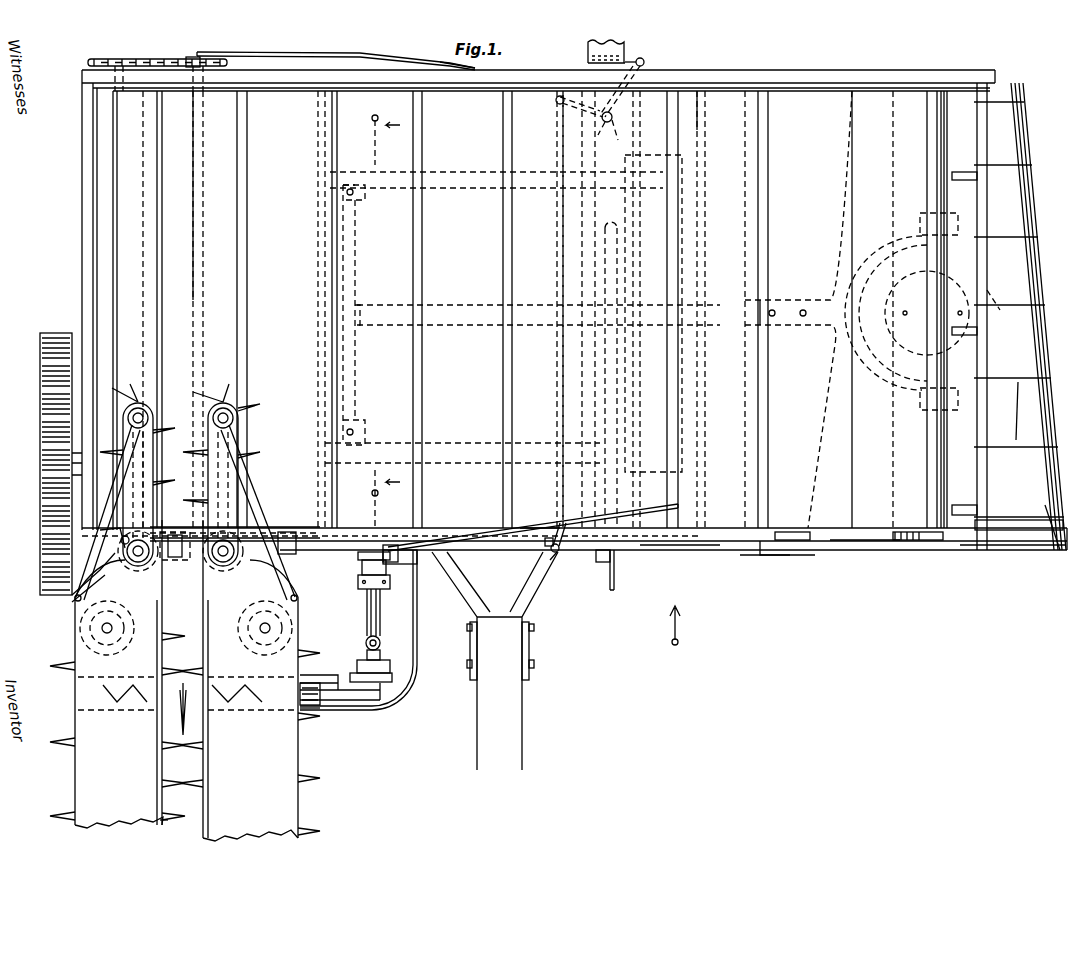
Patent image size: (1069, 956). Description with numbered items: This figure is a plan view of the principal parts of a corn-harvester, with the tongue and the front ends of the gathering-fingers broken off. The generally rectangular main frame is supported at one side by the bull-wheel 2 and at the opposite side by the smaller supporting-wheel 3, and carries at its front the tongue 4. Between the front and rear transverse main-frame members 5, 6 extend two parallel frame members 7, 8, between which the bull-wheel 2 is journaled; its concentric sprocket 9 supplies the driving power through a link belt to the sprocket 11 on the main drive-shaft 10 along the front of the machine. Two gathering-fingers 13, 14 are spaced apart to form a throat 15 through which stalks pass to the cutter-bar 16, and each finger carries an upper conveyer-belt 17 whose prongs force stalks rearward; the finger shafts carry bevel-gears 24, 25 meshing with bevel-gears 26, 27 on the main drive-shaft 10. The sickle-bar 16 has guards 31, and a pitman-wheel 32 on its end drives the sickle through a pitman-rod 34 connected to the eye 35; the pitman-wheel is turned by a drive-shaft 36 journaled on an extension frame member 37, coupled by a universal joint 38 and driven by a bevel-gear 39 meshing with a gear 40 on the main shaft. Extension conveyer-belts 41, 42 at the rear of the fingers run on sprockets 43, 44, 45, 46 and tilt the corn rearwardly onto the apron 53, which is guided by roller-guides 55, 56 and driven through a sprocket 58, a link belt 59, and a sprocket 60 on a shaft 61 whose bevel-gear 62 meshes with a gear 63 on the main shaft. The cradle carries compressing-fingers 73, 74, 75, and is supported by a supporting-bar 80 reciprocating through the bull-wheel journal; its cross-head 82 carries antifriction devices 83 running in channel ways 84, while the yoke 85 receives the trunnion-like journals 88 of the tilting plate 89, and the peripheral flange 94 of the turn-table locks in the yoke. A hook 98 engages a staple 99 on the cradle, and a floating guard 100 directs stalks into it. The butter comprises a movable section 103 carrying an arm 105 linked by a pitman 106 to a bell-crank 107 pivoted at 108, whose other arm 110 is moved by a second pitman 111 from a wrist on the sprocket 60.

The bull-wheel 2 is at (663, 476).
The supporting-wheel 3 is at (40, 468).
The tongue 4 is at (518, 712).
The front transversely-extending main-frame member 5 is at (682, 548).
The rear transversely-extending main-frame member 6 is at (668, 72).
The frame member 7 is at (609, 122).
The frame member 8 is at (693, 124).
The sprocket 9 is at (620, 258).
The main drive-shaft 10 is at (591, 565).
The sprocket 11 is at (622, 562).
The gathering-finger 13 is at (78, 765).
The gathering-finger 14 is at (300, 785).
The throat 15 is at (178, 810).
The cutter-bar 16 is at (322, 725).
The conveyer-belt 17 is at (628, 440).
The bevel-gear 24 is at (60, 600).
The bevel-gear 25 is at (265, 528).
The bevel-gear 26 is at (100, 535).
The bevel-gear 27 is at (235, 523).
The guards 31 is at (185, 703).
The pitman-wheel 32 is at (165, 685).
The pitman-rod 34 is at (355, 710).
The eye 35 is at (306, 712).
The drive-shaft 36 is at (380, 608).
The extension frame member 37 is at (395, 648).
The universal joint 38 is at (366, 640).
The bevel-gear 39 is at (367, 556).
The gear 40 is at (390, 525).
The extension conveyer-belt 41 is at (142, 408).
The extension conveyer-belt 42 is at (240, 415).
The sprocket 43 is at (120, 535).
The sprocket 44 is at (138, 405).
The sprocket 45 is at (250, 520).
The sprocket 46 is at (224, 405).
The apron 53 is at (865, 530).
The roller-guide 55 is at (818, 550).
The roller-guide 56 is at (955, 540).
The sprocket 58 is at (135, 60).
The link belt 59 is at (188, 62).
The sprocket 60 is at (336, 53).
The shaft 61 is at (204, 256).
The bevel-gear 62 is at (190, 522).
The gear 63 is at (183, 556).
The compressing-finger 73 is at (1002, 515).
The compressing-finger 74 is at (1006, 328).
The compressing-finger 75 is at (1004, 170).
The supporting-bar 80 is at (488, 320).
The cross-head 82 is at (352, 262).
The antifriction devices 83 is at (356, 196).
The ways 84 is at (476, 183).
The yoke 85 is at (878, 384).
The trunnion-like journals 88 is at (925, 214).
The tilting plate 89 is at (990, 296).
The peripheral flange portion 94 is at (870, 322).
The hook 98 is at (1046, 518).
The staple 99 is at (1044, 515).
The floating guard 100 is at (1010, 445).
The movable section 103 is at (536, 528).
The arm 105 is at (550, 552).
The pitman 106 is at (560, 250).
The bell-crank 107 is at (566, 116).
The pivot 108 is at (615, 118).
The arm 110 is at (633, 53).
The pitman 111 is at (436, 53).